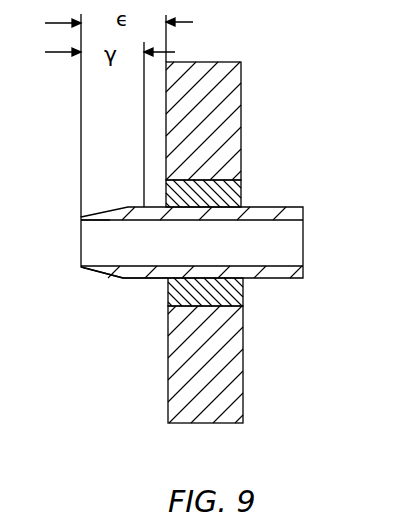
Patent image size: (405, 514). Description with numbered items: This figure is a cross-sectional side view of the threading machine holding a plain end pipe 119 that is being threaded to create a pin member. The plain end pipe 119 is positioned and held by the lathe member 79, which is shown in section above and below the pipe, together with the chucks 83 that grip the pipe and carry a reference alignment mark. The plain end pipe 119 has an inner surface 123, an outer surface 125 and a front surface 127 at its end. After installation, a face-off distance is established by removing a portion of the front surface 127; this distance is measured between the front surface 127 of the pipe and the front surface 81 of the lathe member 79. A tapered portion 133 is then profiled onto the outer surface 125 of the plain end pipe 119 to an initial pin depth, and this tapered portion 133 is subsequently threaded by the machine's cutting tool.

The lathe member 79 is at (241, 83).
The plain end pipe 119 is at (276, 207).
The inner surface 123 is at (103, 222).
The front surface 127 is at (81, 270).
The tapered portion 133 is at (132, 279).
The outer surface 125 is at (156, 279).
The chucks 83 is at (243, 298).
The front surface of lathe member 81 is at (168, 412).